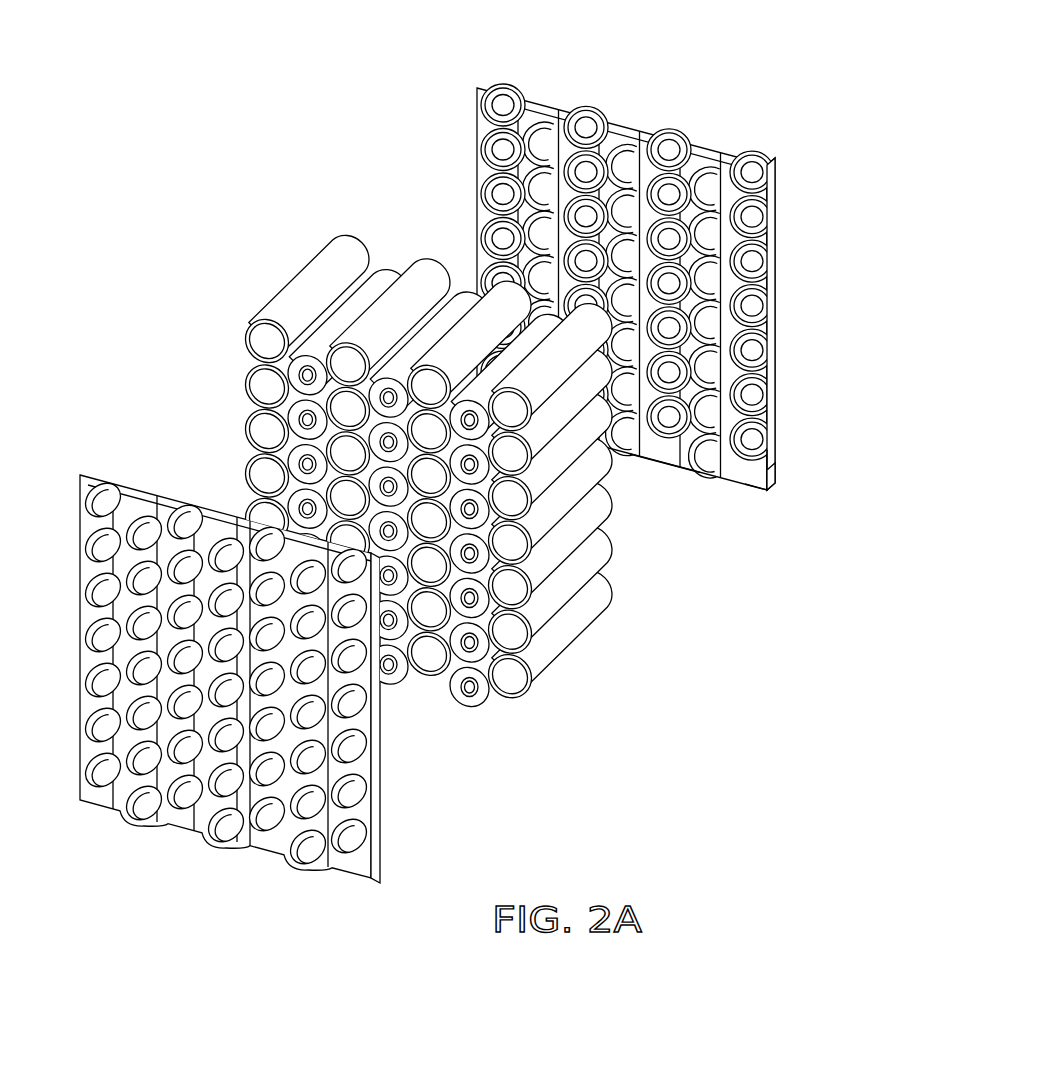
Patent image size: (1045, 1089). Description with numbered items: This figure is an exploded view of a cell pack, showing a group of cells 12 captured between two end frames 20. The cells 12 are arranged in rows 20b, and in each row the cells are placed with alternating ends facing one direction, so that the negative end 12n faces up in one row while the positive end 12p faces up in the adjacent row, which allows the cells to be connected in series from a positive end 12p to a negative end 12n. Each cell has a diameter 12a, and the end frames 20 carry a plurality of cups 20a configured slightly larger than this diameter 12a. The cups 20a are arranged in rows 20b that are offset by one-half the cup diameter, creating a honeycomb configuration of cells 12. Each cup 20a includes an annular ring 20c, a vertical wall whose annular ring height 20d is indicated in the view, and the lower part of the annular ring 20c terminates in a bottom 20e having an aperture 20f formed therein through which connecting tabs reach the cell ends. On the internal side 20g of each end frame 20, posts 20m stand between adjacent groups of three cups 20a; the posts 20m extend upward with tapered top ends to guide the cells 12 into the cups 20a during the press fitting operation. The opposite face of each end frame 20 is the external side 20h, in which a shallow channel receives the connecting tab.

The cells 12 is at (462, 395).
The cell diameter 12a is at (373, 250).
The negative end 12n is at (507, 681).
The positive end 12p is at (466, 689).
The end frame 20 is at (486, 460).
The cup 20a is at (752, 306).
The rows 20b is at (751, 128).
The annular ring 20c is at (773, 462).
The annular ring height 20d is at (762, 570).
The bottom 20e is at (773, 393).
The aperture 20f is at (752, 351).
The internal side 20g is at (670, 506).
The external side 20h is at (806, 199).
The posts 20m is at (772, 248).